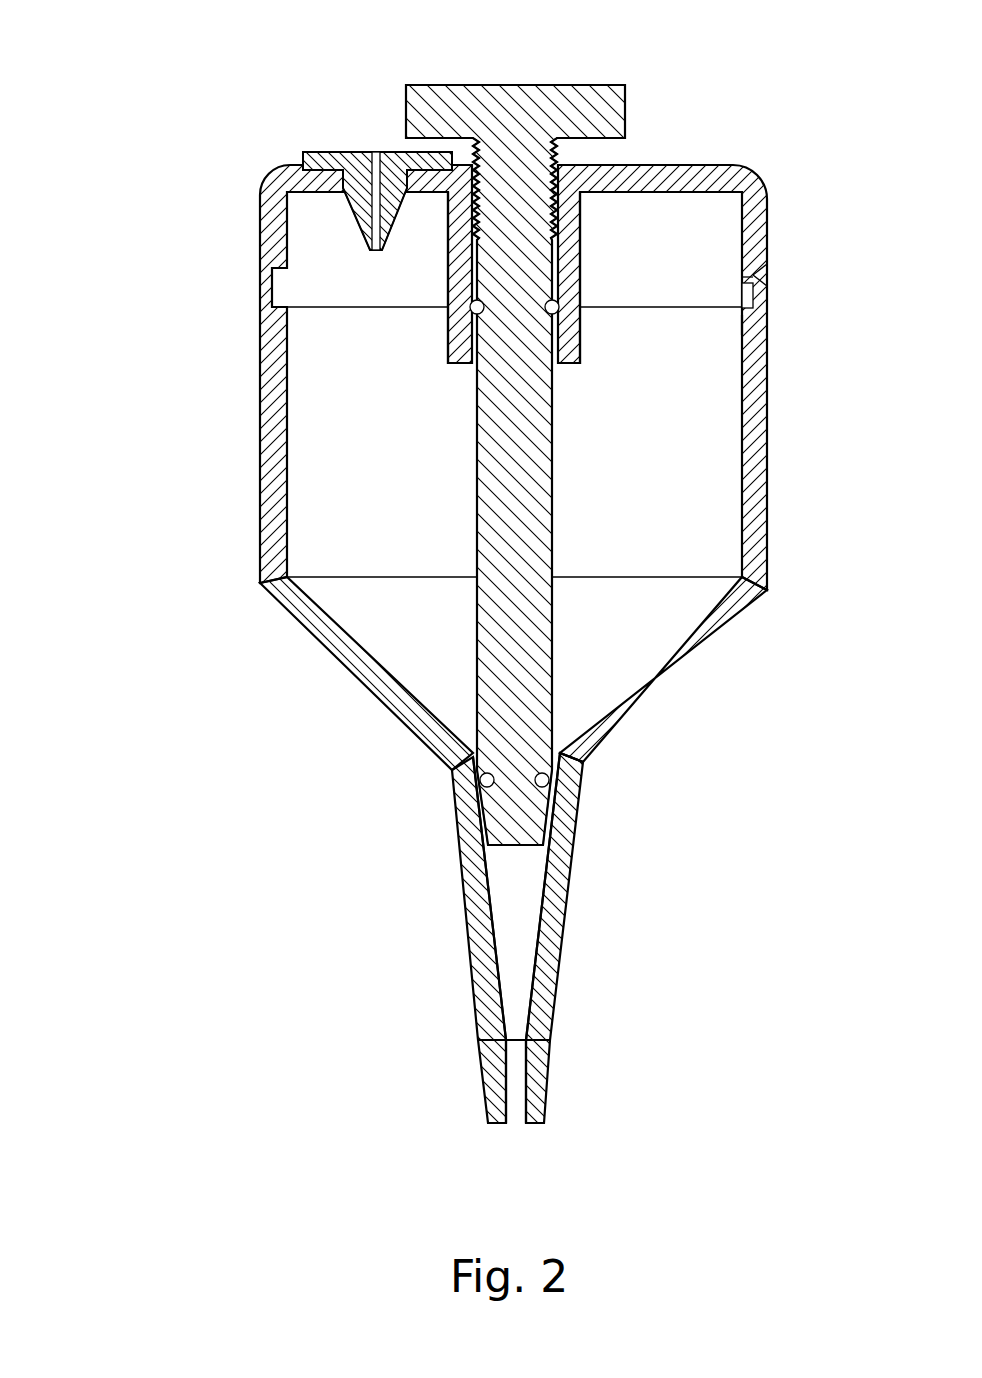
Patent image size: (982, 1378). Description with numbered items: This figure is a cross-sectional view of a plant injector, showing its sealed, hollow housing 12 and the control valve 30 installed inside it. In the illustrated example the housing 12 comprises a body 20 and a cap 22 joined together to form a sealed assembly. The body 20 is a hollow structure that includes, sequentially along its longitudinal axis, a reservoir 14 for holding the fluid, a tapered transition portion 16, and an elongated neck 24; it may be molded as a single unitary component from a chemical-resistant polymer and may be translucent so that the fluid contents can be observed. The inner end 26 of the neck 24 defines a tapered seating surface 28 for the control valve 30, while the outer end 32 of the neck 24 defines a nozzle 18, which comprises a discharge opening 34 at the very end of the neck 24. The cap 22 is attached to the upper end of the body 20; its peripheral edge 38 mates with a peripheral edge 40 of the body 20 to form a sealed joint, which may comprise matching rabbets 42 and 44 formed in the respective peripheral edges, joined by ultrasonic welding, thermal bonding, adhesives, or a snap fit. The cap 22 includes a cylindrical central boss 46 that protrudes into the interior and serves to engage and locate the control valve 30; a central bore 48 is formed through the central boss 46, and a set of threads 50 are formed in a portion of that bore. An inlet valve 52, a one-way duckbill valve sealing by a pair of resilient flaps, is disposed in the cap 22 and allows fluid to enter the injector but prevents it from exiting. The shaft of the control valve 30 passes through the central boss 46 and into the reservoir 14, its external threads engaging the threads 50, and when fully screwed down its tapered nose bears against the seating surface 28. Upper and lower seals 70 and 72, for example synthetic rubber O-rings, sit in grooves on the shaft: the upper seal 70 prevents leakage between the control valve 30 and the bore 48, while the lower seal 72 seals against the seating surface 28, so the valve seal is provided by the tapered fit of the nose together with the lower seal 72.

The housing 12 is at (178, 366).
The reservoir 14 is at (635, 428).
The transition portion 16 is at (710, 647).
The nozzle 18 is at (548, 1093).
The body 20 is at (267, 597).
The cap 22 is at (733, 166).
The neck 24 is at (567, 946).
The inner end 26 is at (642, 755).
The seating surface 28 is at (573, 807).
The control valve 30 is at (588, 46).
The outer end 32 is at (585, 1057).
The discharge opening 34 is at (517, 1118).
The peripheral edge 38 is at (748, 290).
The peripheral edge 40 is at (744, 322).
The rabbet 42 is at (767, 266).
The rabbet 44 is at (752, 306).
The central boss 46 is at (448, 278).
The central bore 48 is at (470, 341).
The threads 50 is at (575, 179).
The inlet valve 52 is at (372, 150).
The upper seal 70 is at (558, 306).
The lower seal 72 is at (483, 784).